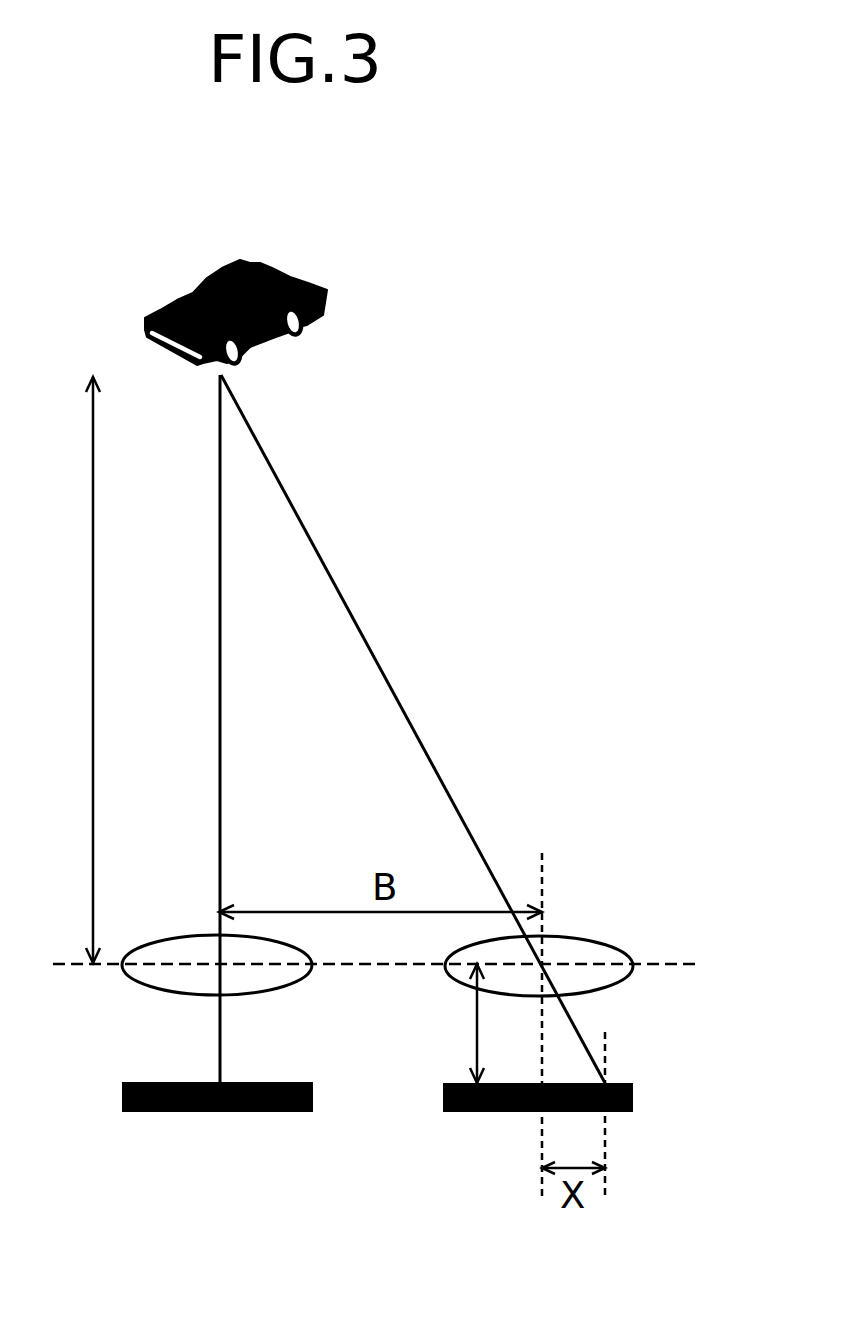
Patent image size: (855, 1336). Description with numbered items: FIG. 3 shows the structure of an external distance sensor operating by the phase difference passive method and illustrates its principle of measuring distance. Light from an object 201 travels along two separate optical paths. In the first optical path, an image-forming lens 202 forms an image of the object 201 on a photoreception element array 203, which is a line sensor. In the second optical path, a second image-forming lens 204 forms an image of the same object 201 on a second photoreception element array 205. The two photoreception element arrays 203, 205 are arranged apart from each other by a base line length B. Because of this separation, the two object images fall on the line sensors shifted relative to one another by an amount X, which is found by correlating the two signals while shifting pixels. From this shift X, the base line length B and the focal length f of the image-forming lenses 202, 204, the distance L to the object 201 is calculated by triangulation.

The object 201 is at (318, 286).
The image-forming lens for first optical path 202 is at (148, 987).
The photoreception element array (line sensor) for first optical path 203 is at (182, 1112).
The image-forming lens for second optical path 204 is at (598, 940).
The photoreception element array (line sensor) for second optical path 205 is at (492, 1112).